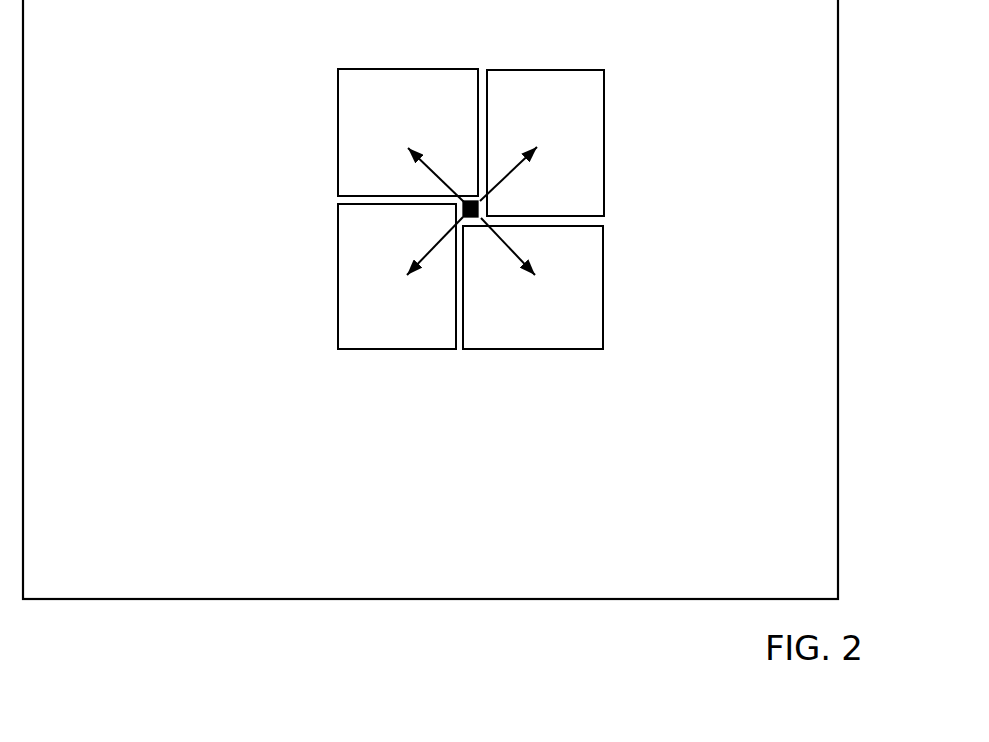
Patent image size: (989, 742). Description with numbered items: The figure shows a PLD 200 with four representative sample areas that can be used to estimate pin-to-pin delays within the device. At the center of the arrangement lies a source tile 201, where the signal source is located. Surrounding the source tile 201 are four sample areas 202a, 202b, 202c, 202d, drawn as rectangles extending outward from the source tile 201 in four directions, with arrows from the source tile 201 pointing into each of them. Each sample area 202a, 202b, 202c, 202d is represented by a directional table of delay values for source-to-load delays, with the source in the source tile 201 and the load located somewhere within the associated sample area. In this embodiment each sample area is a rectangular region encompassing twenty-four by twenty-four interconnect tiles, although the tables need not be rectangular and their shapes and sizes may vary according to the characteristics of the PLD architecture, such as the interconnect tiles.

The PLD 200 is at (430, 299).
The source tile 201 is at (479, 209).
The sample area 202a is at (408, 135).
The sample area 202b is at (542, 143).
The sample area 202c is at (400, 276).
The sample area 202d is at (533, 283).